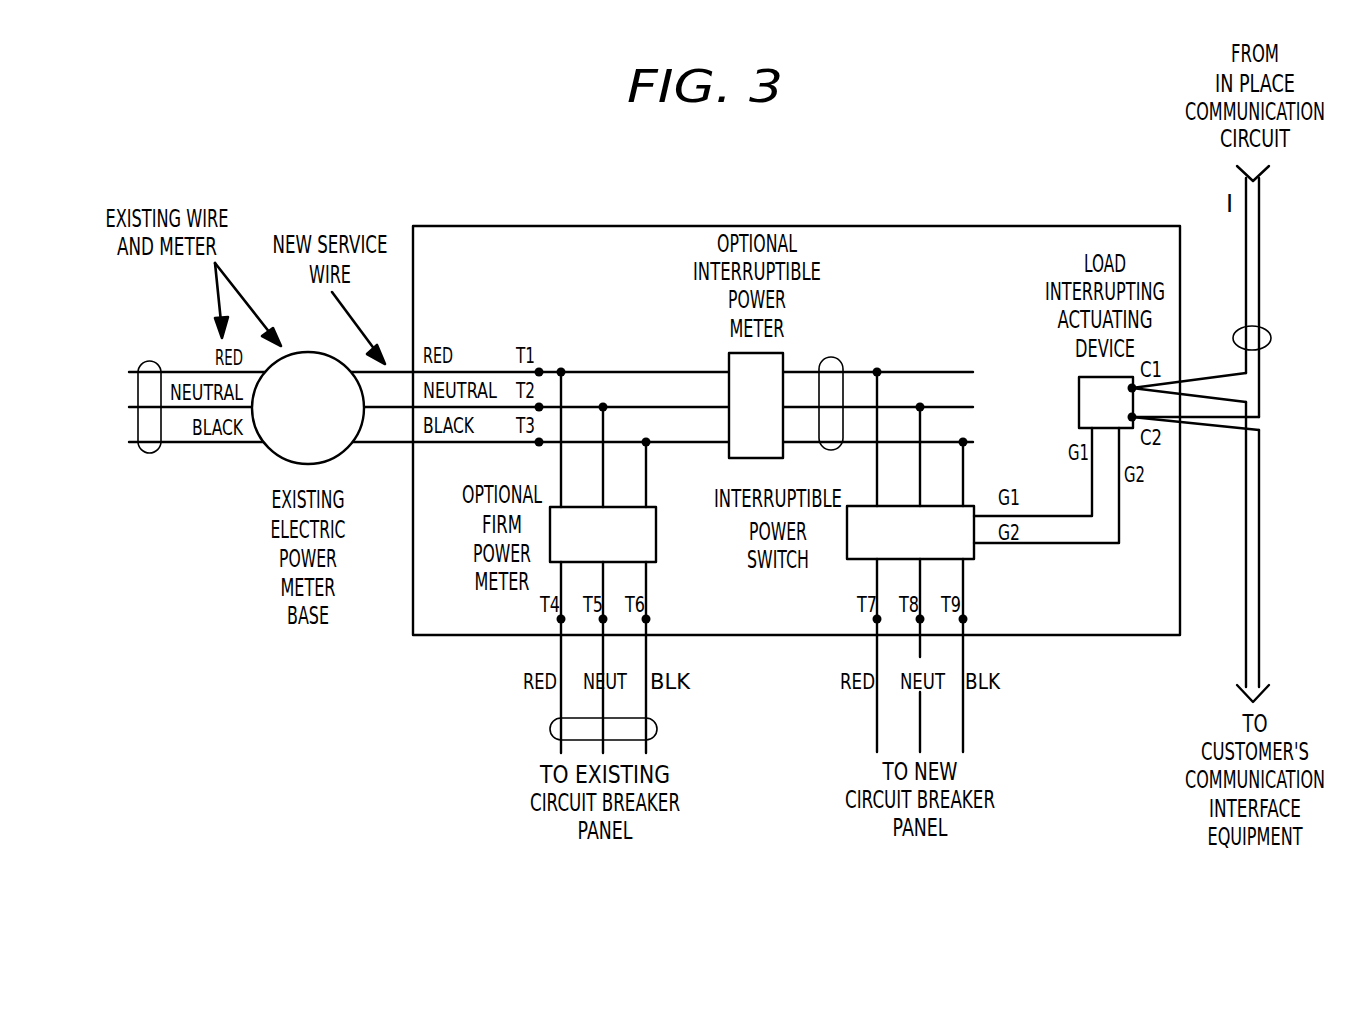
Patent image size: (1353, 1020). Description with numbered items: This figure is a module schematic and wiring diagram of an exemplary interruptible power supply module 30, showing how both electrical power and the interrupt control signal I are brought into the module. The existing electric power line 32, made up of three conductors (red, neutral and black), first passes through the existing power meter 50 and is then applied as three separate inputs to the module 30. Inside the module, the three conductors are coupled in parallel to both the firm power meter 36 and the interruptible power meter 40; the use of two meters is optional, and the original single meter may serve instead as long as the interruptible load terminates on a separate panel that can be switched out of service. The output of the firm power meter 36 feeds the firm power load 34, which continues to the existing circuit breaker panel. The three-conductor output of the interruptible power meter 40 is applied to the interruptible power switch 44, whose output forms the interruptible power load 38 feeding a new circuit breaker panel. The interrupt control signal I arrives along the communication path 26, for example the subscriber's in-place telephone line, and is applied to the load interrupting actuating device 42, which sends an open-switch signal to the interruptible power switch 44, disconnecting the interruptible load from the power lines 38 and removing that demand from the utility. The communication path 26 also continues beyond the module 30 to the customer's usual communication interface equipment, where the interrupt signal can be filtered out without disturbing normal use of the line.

The communication path 26 is at (1271, 334).
The interruptible power supply module 30 is at (938, 226).
The existing electric power line 32 is at (145, 453).
The firm power load 34 is at (550, 728).
The firm power meter 36 is at (656, 527).
The interruptible power load 38 is at (838, 360).
The interruptible power meter 40 is at (729, 354).
The load interrupting actuating device 42 is at (1079, 398).
The interruptible power switch 44 is at (974, 559).
The existing power meter 50 is at (270, 456).